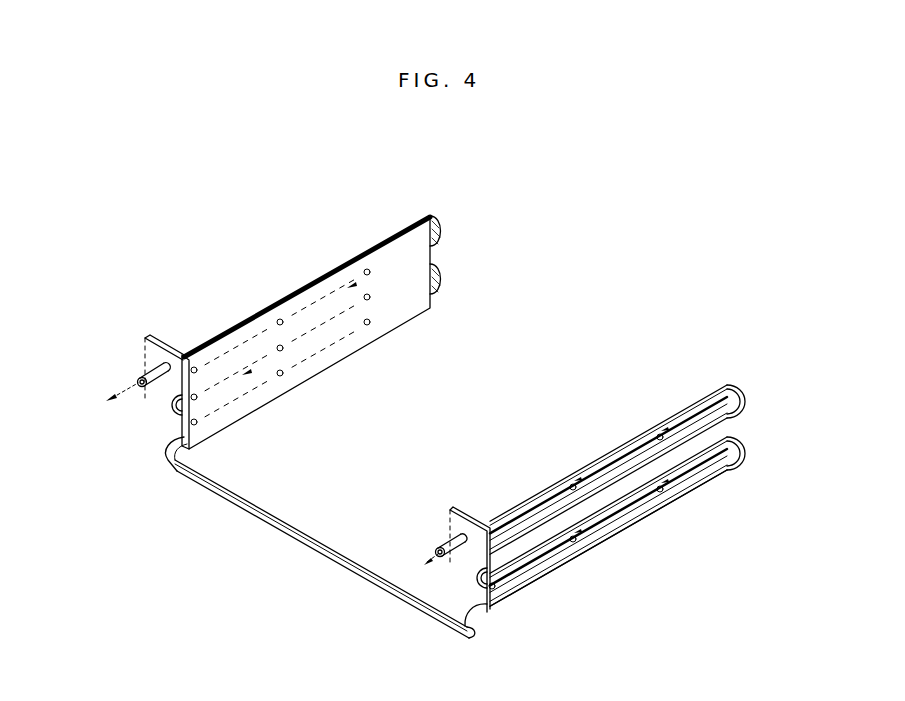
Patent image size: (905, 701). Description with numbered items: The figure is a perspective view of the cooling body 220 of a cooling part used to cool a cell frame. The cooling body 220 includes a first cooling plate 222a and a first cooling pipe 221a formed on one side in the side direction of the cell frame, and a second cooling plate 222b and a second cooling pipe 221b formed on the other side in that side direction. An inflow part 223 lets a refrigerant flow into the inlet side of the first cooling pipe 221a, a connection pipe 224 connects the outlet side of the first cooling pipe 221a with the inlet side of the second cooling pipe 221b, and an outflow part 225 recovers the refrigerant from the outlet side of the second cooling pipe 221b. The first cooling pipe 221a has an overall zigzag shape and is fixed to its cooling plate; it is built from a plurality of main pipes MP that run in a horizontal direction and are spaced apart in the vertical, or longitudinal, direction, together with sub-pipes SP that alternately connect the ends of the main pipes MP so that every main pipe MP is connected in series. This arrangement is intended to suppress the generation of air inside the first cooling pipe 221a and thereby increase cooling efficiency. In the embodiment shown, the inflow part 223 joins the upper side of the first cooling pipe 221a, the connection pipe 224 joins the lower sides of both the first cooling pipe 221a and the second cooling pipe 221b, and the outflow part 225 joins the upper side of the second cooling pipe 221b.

The cooling body 220 is at (213, 210).
The first cooling pipe 221a is at (744, 377).
The second cooling pipe 221b is at (441, 217).
The first cooling plate 222a is at (681, 402).
The second cooling plate 222b is at (397, 222).
The inflow part 223 is at (440, 498).
The connection pipe 224 is at (300, 548).
The outflow part 225 is at (138, 334).
The sub-pipe SP is at (746, 445).
The main pipe MP is at (713, 495).